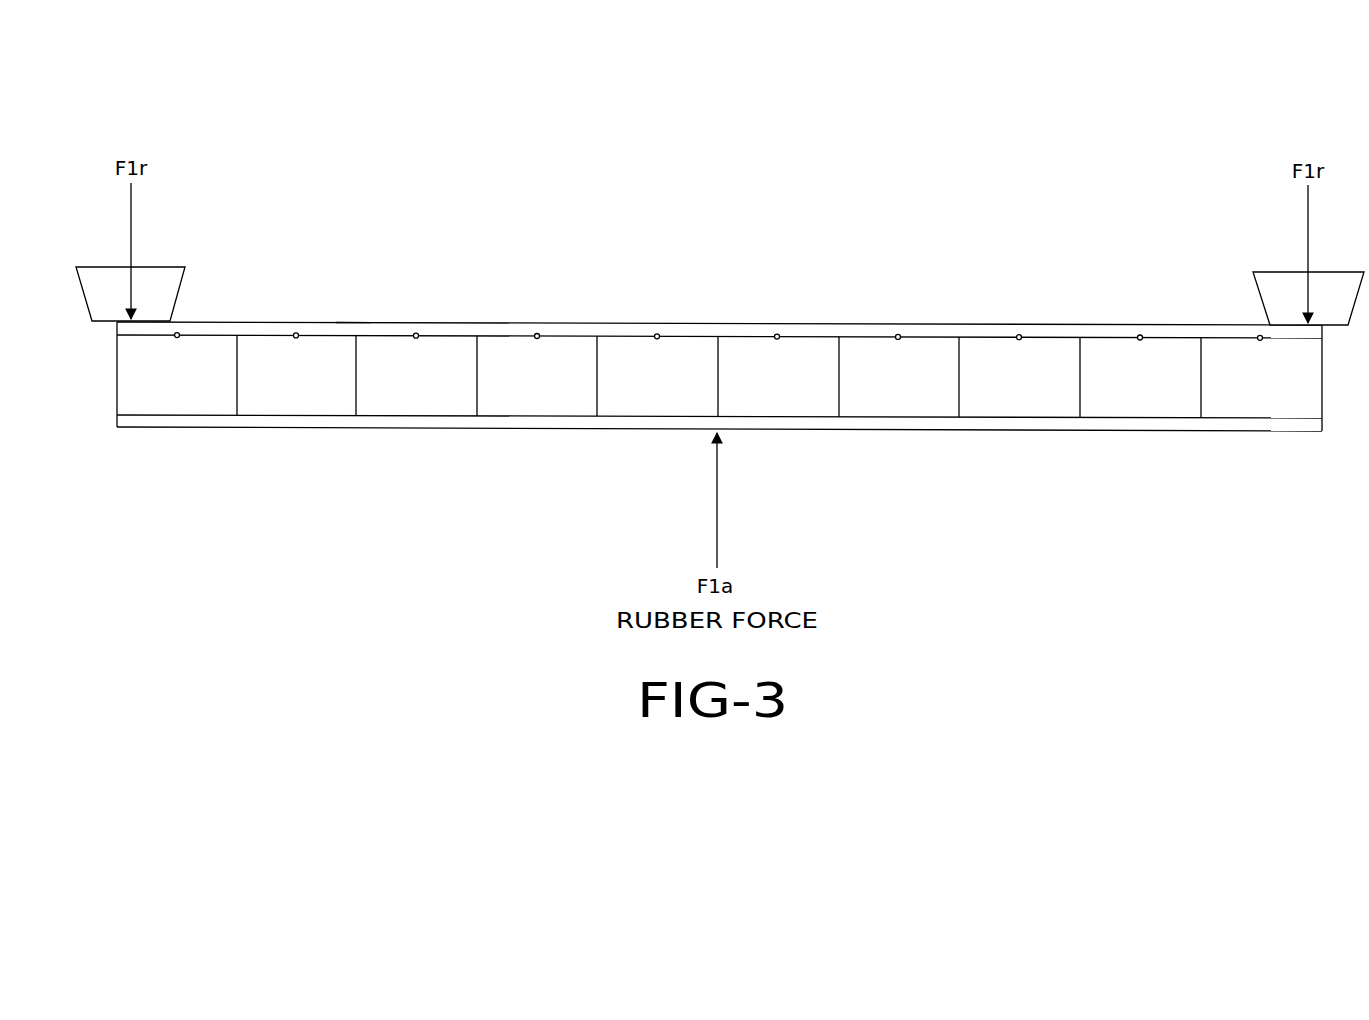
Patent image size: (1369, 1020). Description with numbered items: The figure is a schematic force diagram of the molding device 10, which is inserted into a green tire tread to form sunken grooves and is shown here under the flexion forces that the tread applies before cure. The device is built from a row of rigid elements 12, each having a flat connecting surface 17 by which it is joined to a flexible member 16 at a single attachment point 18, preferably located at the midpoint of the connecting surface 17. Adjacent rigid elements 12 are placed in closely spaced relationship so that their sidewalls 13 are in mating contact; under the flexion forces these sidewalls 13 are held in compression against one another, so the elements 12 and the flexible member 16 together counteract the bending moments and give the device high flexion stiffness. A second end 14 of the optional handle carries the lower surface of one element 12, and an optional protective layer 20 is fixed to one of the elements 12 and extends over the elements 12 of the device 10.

The molding device 10 is at (299, 167).
The rigid element 12 is at (410, 392).
The sidewall 13 is at (958, 372).
The second end 14 is at (371, 334).
The flexible member 16 is at (810, 333).
The connecting surface 17 is at (462, 336).
The attachment point 18 is at (416, 334).
The protective layer 20 is at (1025, 424).